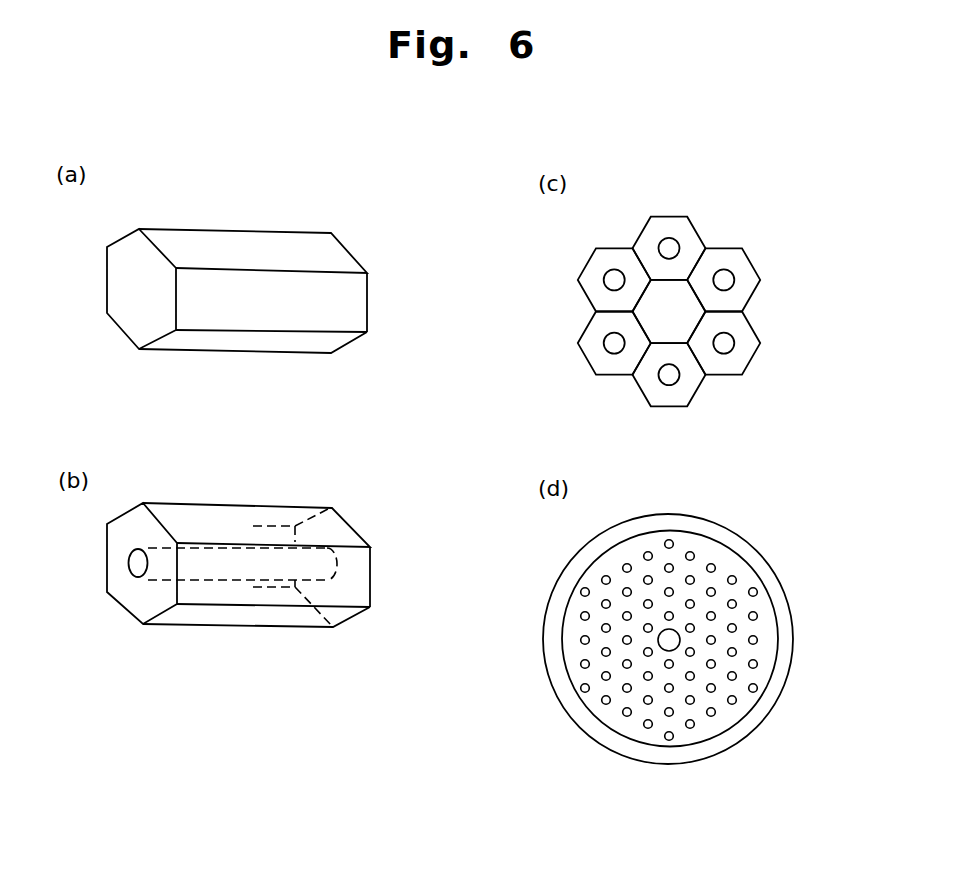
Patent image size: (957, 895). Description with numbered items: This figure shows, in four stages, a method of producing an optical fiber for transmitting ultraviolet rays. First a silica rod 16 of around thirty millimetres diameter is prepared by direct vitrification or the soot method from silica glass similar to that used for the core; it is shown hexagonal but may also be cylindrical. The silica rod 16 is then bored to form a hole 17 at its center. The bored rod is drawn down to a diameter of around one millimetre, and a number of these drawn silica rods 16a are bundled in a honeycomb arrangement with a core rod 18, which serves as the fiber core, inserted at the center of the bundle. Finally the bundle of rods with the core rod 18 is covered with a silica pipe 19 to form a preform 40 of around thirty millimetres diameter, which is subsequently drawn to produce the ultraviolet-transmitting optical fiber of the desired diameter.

The silica rod 16 is at (329, 250).
The hole 17 is at (133, 563).
The drawn silica rods 16a is at (728, 259).
The core rod 18 is at (675, 318).
The preform 40 is at (709, 621).
The silica pipe 19 is at (783, 632).